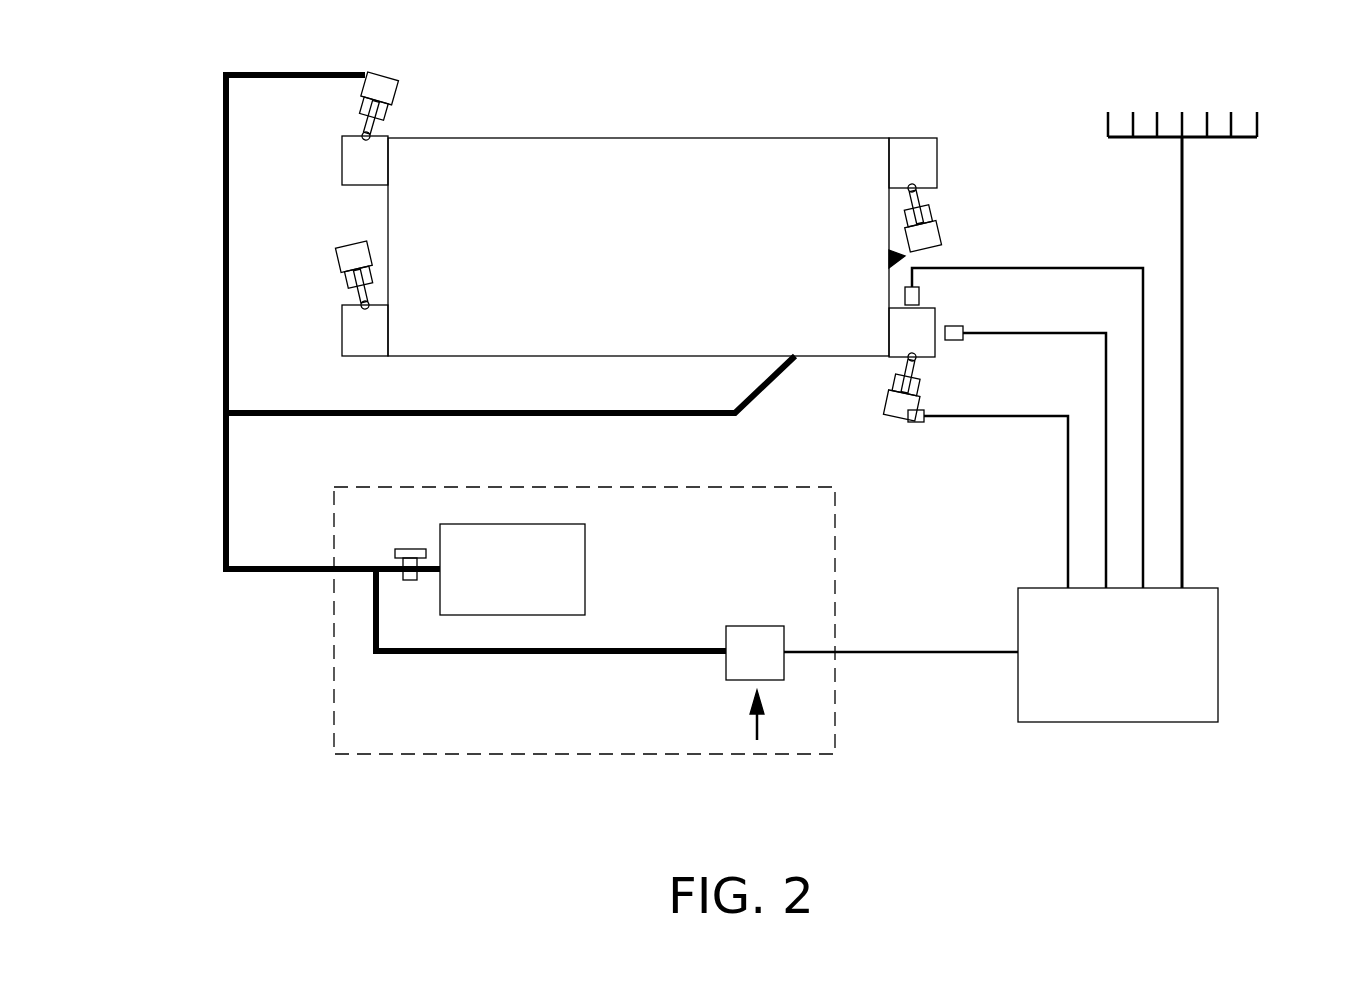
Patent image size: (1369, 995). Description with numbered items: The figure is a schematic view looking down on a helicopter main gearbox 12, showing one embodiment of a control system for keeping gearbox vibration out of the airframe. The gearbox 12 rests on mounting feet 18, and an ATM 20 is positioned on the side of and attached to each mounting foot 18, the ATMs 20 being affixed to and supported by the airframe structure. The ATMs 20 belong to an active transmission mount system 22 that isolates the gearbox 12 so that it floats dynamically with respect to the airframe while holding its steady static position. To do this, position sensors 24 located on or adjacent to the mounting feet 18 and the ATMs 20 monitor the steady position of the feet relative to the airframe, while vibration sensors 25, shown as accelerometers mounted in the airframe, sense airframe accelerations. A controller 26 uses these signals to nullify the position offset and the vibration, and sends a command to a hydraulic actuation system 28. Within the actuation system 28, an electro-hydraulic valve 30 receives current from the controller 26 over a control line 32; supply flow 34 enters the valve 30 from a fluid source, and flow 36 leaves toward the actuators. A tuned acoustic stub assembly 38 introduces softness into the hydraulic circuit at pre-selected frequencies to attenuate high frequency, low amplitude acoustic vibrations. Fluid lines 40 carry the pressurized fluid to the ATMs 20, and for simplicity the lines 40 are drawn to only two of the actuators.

The gearbox 12 is at (738, 157).
The mounting feet 18 is at (363, 163).
The ATMs 20 is at (390, 78).
The active transmission mount system 22 is at (1222, 342).
The sensors 24 is at (920, 296).
The vibration sensors 25 is at (1260, 130).
The controller 26 is at (1178, 662).
The actuation system 28 is at (325, 661).
The electro-hydraulic valve 30 is at (755, 626).
The control line 32 is at (922, 652).
The supply flow 34 is at (757, 732).
The flow to the ATM actuators 36 is at (580, 654).
The tuned acoustic stub assembly 38 is at (586, 560).
The fluid lines 40 is at (226, 300).